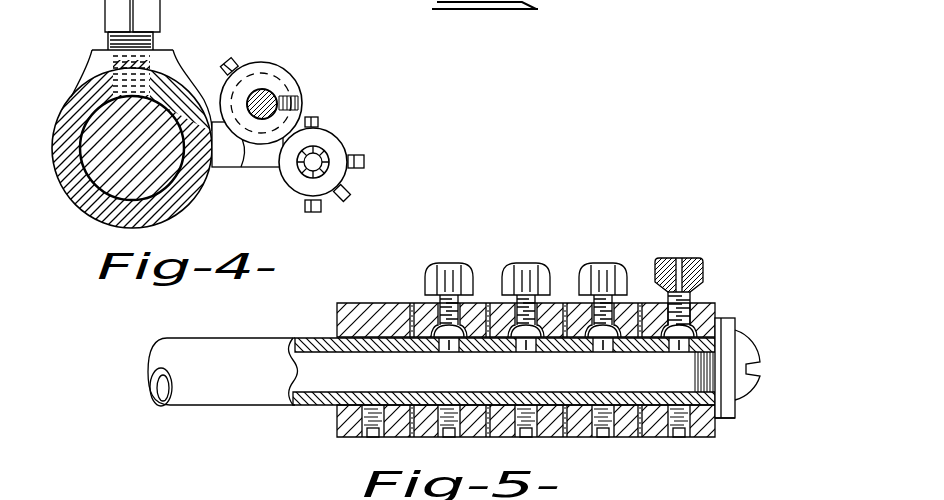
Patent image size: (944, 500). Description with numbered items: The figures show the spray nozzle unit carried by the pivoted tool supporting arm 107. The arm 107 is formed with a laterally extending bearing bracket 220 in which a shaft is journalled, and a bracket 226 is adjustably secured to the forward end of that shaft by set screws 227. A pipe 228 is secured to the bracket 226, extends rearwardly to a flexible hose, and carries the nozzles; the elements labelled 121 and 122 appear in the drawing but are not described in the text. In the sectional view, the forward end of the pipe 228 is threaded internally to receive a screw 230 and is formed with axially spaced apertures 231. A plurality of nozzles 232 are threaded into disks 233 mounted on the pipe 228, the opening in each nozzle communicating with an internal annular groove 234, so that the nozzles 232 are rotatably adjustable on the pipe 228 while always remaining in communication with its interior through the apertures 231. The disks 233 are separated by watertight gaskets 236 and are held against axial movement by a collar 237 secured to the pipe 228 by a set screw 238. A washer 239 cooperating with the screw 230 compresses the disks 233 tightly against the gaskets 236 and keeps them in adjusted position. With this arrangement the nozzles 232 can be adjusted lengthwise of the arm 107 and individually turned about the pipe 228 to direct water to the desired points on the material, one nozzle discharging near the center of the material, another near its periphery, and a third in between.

In FIG. 4, the pivoted tool supporting arm 107 is at (190, 198).
In FIG. 4, the bearing bracket 220 is at (247, 158).
In FIG. 4, the shaft 121 is at (276, 96).
In FIG. 4, the collar 122 is at (268, 64).
In FIG. 4, the set screws 227 is at (238, 60).
In FIG. 4, the bracket 226 is at (321, 131).
In FIG. 4, the pipe 228 is at (326, 153).
In FIG. 5, the pipe 228 is at (212, 352).
In FIG. 5, the nozzles 232 is at (673, 258).
In FIG. 5, the apertures 231 is at (600, 352).
In FIG. 5, the internal annular groove 234 is at (718, 322).
In FIG. 5, the screw 230 is at (742, 349).
In FIG. 5, the washer 239 is at (727, 406).
In FIG. 5, the collar 237 is at (338, 426).
In FIG. 5, the set screw 238 is at (372, 440).
In FIG. 5, the watertight gaskets 236 is at (412, 438).
In FIG. 5, the disks 233 is at (648, 428).